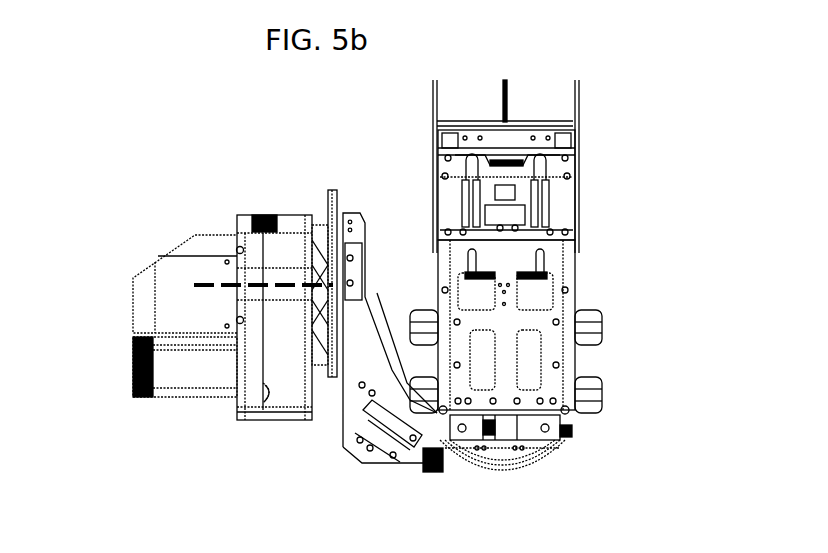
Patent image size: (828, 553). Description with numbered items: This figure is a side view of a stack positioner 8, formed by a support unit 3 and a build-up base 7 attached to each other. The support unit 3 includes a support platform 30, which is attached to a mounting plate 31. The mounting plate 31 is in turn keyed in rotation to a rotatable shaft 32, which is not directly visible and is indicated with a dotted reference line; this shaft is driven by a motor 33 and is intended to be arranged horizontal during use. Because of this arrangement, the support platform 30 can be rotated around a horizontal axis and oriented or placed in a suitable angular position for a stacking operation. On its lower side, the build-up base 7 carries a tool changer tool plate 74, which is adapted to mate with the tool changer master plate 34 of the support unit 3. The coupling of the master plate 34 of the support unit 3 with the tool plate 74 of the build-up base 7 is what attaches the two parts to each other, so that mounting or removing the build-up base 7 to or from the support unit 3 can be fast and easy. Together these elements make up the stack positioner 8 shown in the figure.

The stack positioner 8 is at (220, 137).
The motor 33 is at (190, 272).
The rotatable shaft 32 is at (207, 287).
The support unit 3 is at (310, 428).
The mounting plate 31 is at (342, 207).
The build-up base 7 is at (600, 208).
The tool changer tool plate 74 is at (600, 412).
The tool changer master plate 34 is at (573, 437).
The support platform 30 is at (458, 450).